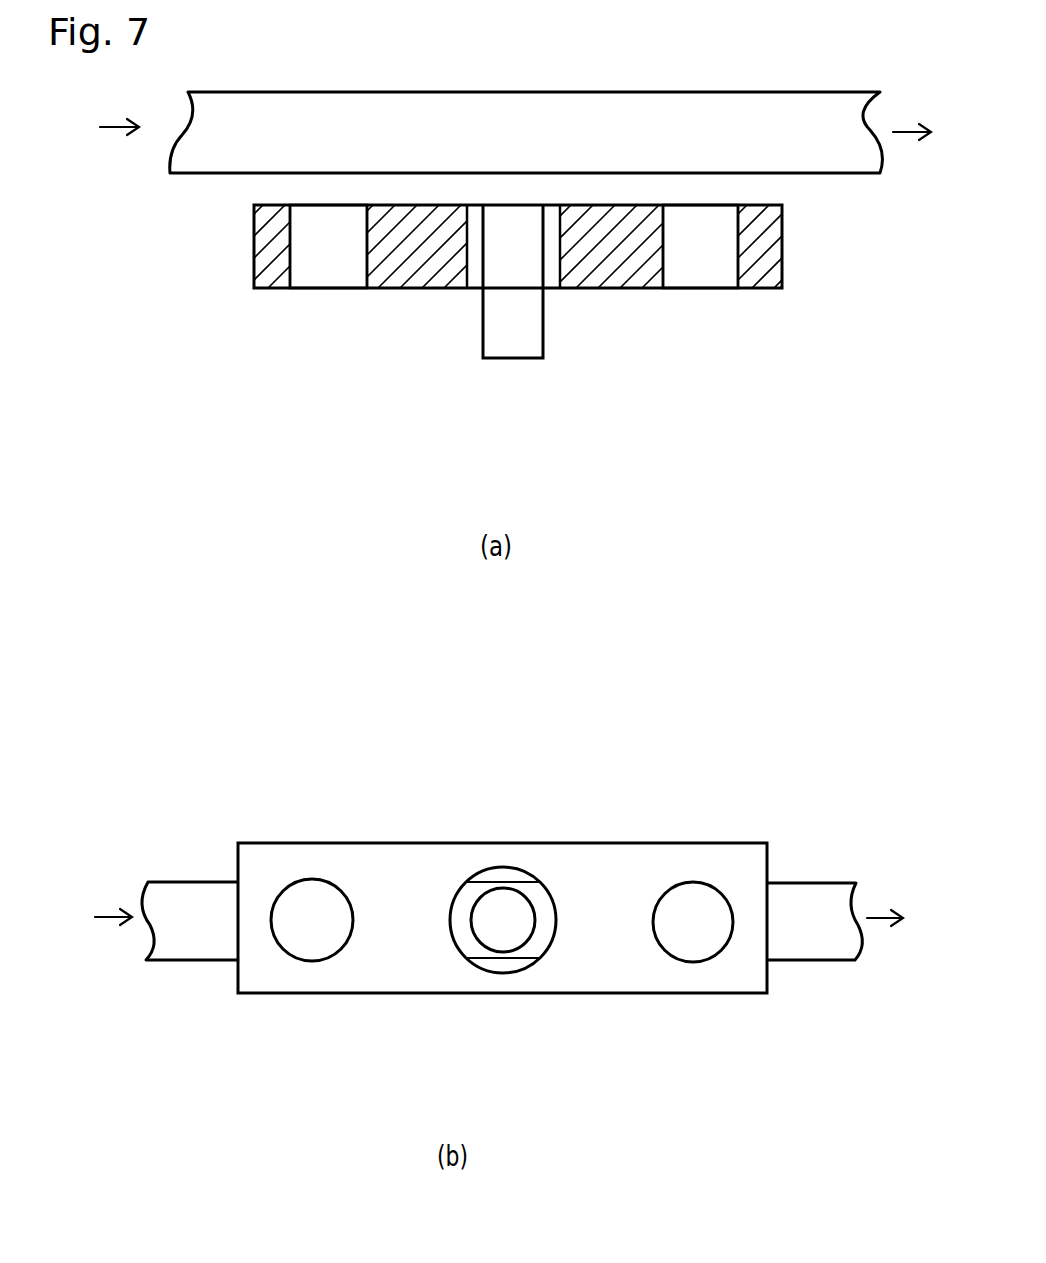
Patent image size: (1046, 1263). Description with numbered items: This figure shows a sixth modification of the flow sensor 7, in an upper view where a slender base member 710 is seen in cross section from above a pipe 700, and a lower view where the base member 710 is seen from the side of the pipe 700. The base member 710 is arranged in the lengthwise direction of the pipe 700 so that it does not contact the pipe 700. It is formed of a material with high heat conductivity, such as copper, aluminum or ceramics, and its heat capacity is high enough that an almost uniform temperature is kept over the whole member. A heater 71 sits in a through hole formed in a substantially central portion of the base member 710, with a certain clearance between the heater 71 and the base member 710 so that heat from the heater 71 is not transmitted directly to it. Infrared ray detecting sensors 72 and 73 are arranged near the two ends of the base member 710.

The flow sensor 7 is at (805, 328).
The pipe 700 is at (490, 92).
The base member 710 is at (782, 250).
The heater 71 is at (483, 332).
The infrared ray detecting sensor 72 is at (318, 290).
The infrared ray detecting sensor 73 is at (705, 290).